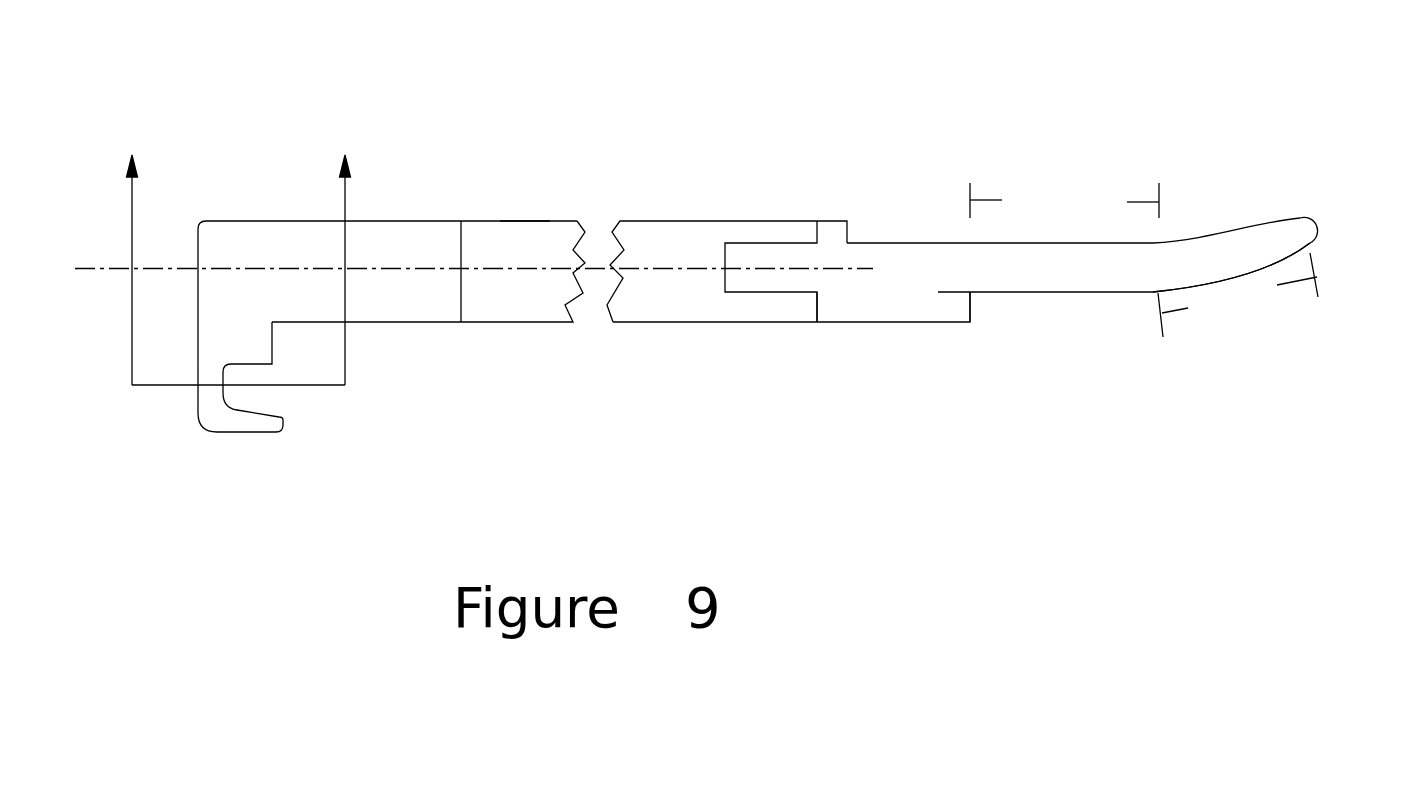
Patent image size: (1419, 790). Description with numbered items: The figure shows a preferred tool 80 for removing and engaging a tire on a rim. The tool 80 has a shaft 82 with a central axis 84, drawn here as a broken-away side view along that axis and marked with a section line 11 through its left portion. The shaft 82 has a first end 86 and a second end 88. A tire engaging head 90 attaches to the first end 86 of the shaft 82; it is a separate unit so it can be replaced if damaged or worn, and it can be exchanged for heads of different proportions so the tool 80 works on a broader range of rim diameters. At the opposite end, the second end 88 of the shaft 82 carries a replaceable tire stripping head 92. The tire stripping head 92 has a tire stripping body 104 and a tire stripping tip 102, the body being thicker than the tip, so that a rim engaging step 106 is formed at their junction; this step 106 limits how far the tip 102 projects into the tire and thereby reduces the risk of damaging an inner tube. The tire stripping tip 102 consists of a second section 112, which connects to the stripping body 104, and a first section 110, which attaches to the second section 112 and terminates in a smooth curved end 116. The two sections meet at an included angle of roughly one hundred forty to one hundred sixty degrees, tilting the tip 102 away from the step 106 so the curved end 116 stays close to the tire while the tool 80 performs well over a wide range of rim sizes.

The tool 80 is at (780, 460).
The tire engaging head 90 is at (228, 107).
The section line 11- 11 is at (234, 236).
The central axis 84 is at (440, 263).
The first end 86 is at (523, 221).
The shaft 82 is at (719, 207).
The second end 88 is at (787, 221).
The tire stripping body 104 is at (881, 340).
The rim engaging step 106 is at (986, 339).
The tire stripping head 92 is at (1204, 457).
The tire stripping tip 102 is at (1134, 334).
The smooth curved end 116 is at (1313, 233).
The second section 112 is at (1064, 203).
The first section 110 is at (1238, 295).